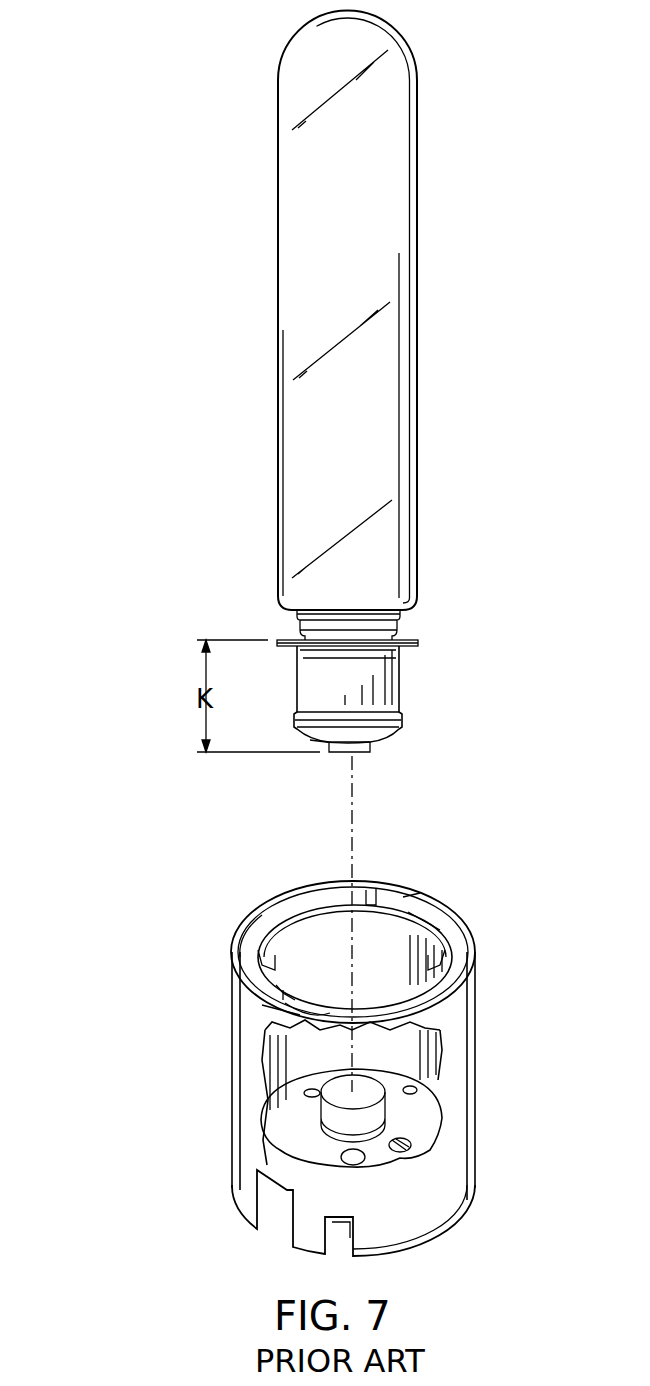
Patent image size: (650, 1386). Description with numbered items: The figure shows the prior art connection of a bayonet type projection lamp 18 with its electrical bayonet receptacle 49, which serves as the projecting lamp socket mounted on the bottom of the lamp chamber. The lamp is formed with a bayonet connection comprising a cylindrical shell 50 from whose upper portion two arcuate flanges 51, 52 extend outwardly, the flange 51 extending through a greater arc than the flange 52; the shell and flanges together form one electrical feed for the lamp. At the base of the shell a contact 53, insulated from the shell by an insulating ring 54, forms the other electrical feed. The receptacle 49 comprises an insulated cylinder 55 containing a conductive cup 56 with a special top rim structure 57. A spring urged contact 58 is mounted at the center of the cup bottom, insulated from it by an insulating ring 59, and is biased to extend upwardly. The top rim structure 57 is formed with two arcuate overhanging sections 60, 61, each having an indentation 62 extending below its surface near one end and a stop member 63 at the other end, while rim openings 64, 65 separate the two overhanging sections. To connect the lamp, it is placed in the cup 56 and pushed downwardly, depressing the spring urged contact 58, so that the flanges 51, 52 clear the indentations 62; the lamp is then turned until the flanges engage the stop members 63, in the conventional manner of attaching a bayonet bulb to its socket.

The projection lamp 18 is at (278, 292).
The electrical bayonet receptacle 49 is at (172, 1090).
The cylindrical shell 50 is at (399, 689).
The arcuate flange 51 is at (281, 640).
The arcuate flange 52 is at (397, 640).
The contact 53 is at (345, 753).
The insulating ring 54 is at (372, 742).
The insulated cylinder 55 is at (475, 1072).
The conductive cup 56 is at (403, 897).
The top rim structure 57 is at (320, 893).
The spring urged contact 58 is at (262, 1118).
The insulating ring 59 is at (440, 1122).
The arcuate overhanging section 60 is at (268, 915).
The arcuate overhanging section 61 is at (427, 990).
The indentation 62 is at (258, 957).
The stop member 63 is at (390, 968).
The rim opening 64 is at (423, 925).
The rim opening 65 is at (275, 996).